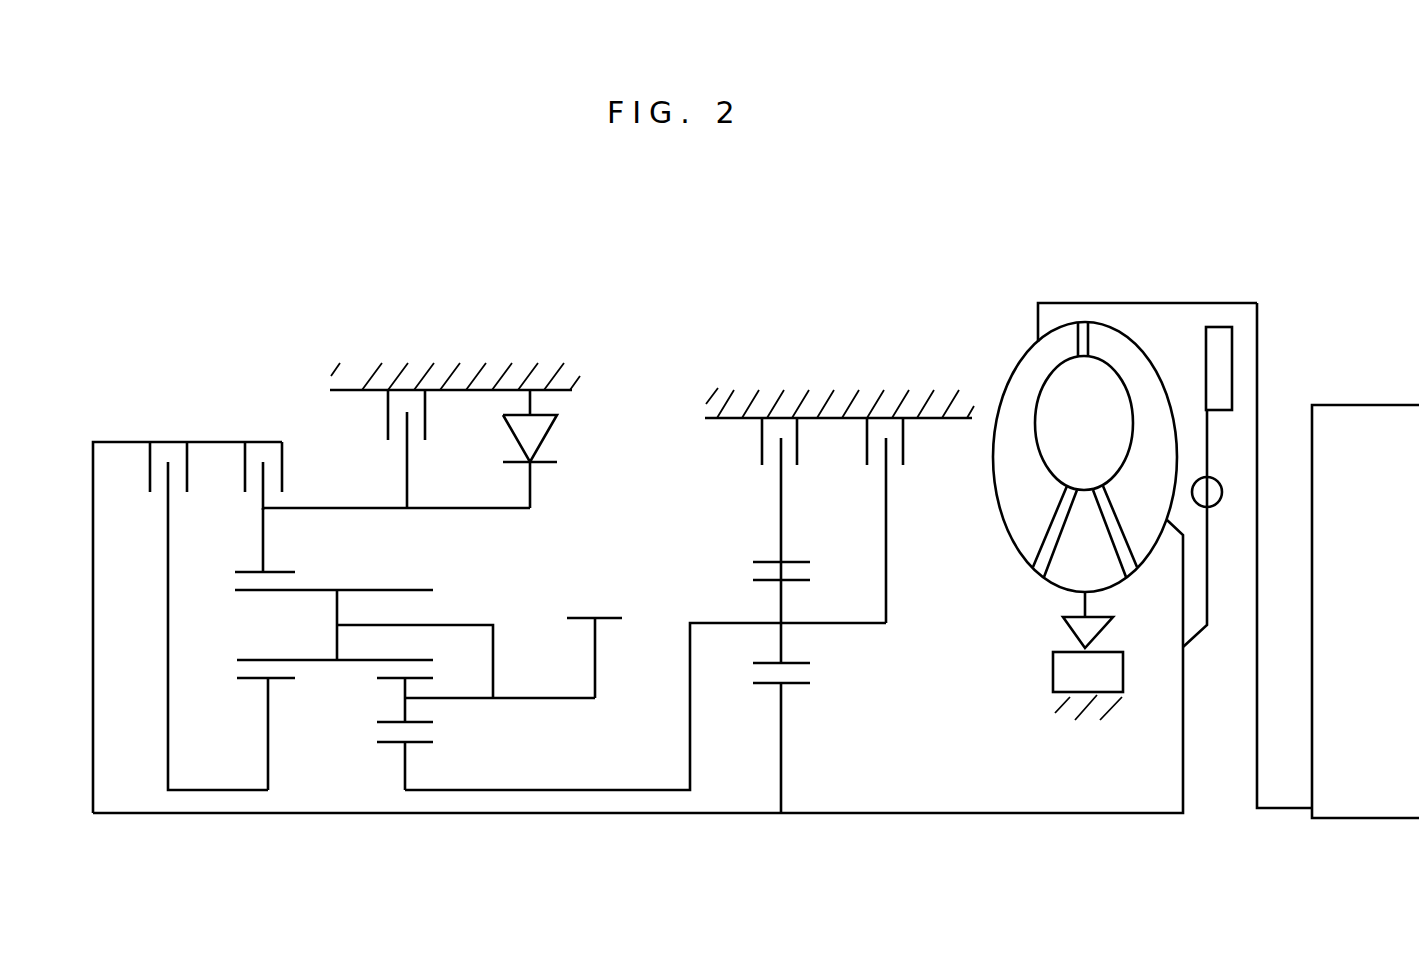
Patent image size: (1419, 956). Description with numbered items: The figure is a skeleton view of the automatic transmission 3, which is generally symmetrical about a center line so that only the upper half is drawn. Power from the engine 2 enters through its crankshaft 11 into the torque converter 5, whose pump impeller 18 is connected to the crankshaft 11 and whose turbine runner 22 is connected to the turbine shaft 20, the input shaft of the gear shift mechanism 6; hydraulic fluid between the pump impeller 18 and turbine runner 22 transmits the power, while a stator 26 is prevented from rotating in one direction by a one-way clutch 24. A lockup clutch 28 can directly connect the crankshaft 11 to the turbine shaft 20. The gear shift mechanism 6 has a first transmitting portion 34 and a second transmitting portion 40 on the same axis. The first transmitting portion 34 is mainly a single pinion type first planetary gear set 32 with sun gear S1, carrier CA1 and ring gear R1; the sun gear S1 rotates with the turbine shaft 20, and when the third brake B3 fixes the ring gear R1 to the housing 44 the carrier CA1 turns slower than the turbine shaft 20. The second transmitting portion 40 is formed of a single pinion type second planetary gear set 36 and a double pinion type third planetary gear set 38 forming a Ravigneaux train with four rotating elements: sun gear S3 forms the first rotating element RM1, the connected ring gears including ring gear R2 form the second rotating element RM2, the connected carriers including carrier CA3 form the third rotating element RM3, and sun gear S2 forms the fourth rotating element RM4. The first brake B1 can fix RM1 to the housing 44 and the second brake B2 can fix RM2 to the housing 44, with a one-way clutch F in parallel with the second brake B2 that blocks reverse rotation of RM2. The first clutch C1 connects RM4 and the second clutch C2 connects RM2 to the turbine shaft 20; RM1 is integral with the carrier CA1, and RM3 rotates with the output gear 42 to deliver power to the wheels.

The engine 2 is at (1352, 822).
The automatic transmission 3 is at (930, 207).
The torque converter 5 is at (1220, 272).
The gear shift mechanism 6 is at (772, 335).
The crankshaft 11 is at (1281, 810).
The pump impeller 18 is at (1033, 360).
The turbine shaft 20 is at (886, 815).
The turbine runner 22 is at (1130, 352).
The one-way clutch 24 is at (1093, 630).
The stator 26 is at (1060, 575).
The lockup clutch 28 is at (1218, 348).
The first planetary gear set 32 is at (783, 820).
The first transmitting portion 34 is at (700, 447).
The second planetary gear set 36 is at (265, 795).
The third planetary gear set 38 is at (405, 795).
The second transmitting portion 40 is at (478, 358).
The output gear 42 is at (607, 617).
The housing 44 is at (375, 368).
The first clutch C1 is at (171, 451).
The second clutch C2 is at (266, 456).
The first brake B1 is at (907, 444).
The second brake B2 is at (430, 449).
The third brake B3 is at (756, 490).
The one-way clutch F is at (541, 449).
The first rotating element RM1 is at (535, 813).
The second rotating element RM2 is at (318, 507).
The third rotating element RM3 is at (553, 698).
The fourth rotating element RM4 is at (268, 768).
The ring gear R1 is at (790, 560).
The ring gear R2 is at (275, 572).
The sun gear S1 is at (795, 685).
The sun gear S2 is at (277, 680).
The sun gear S3 is at (433, 745).
The carrier CA1 is at (887, 570).
The carrier CA3 is at (447, 622).